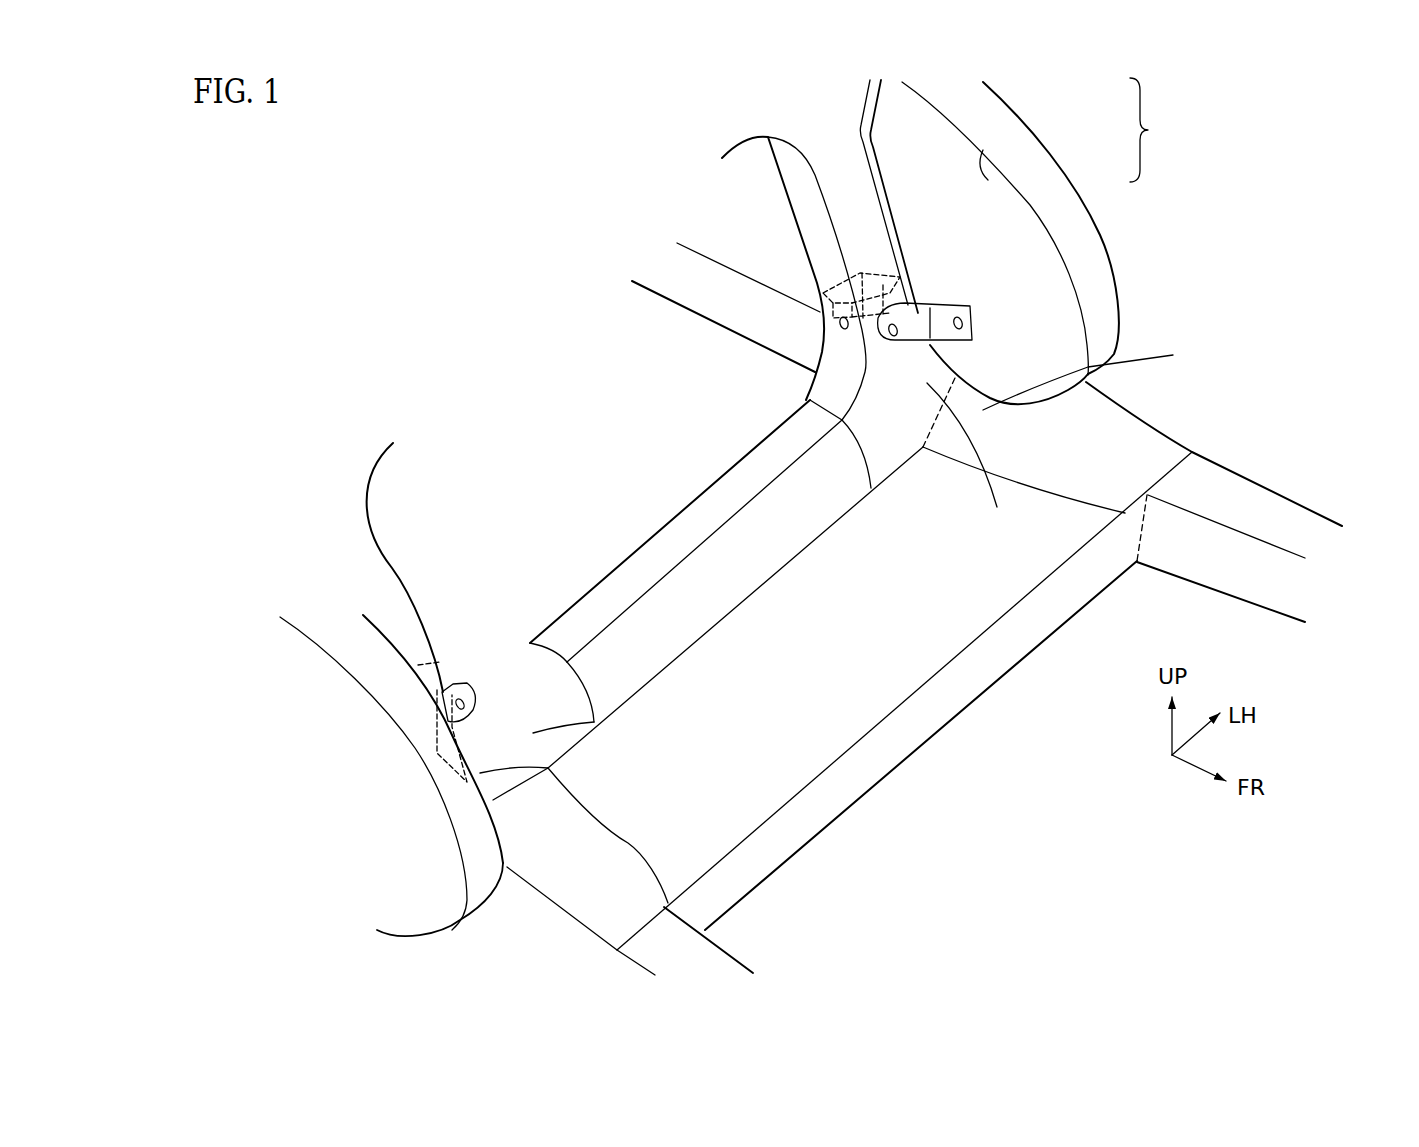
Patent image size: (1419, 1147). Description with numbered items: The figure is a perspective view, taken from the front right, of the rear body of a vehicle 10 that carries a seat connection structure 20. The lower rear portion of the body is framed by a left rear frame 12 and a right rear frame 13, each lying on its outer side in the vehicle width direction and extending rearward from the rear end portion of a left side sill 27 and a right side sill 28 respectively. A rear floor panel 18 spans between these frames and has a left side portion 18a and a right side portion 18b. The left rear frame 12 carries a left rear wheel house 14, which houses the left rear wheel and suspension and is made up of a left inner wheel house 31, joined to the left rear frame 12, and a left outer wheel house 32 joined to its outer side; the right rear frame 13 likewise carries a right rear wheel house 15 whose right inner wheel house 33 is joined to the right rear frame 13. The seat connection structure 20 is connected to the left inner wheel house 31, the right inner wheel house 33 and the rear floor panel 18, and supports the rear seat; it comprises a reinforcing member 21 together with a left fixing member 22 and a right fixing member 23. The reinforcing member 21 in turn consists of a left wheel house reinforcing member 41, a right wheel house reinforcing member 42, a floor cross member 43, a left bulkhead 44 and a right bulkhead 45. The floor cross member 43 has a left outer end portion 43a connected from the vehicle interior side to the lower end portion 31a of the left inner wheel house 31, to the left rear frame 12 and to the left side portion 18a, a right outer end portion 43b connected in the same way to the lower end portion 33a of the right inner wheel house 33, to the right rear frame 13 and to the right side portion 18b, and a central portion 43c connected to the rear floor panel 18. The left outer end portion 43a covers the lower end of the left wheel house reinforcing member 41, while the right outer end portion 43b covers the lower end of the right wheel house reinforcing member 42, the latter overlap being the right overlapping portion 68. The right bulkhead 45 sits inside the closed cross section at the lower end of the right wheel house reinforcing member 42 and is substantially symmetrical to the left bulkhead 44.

The vehicle 10 is at (461, 314).
The left rear frame 12 is at (1162, 483).
The right rear frame 13 is at (527, 842).
The left rear wheel house 14 is at (1156, 130).
The right rear wheel house 15 is at (330, 651).
The rear floor panel 18 is at (743, 665).
The left side portion of the rear floor panel 18a is at (920, 463).
The right side portion of the rear floor panel 18b is at (647, 758).
The seat connection structure 20 is at (572, 526).
The reinforcing member 21 is at (671, 509).
The left fixing member 22 is at (927, 300).
The right fixing member 23 is at (442, 722).
The left side sill 27 is at (1285, 511).
The right side sill 28 is at (709, 965).
The left inner wheel house 31 is at (1010, 118).
The lower end portion of the left inner wheel house 31a is at (940, 352).
The left outer wheel house 32 is at (1050, 168).
The right inner wheel house 33 is at (380, 672).
The lower end portion of the right inner wheel house 33a is at (548, 770).
The left wheel house reinforcing member 41 is at (794, 229).
The right wheel house reinforcing member 42 is at (415, 590).
The floor cross member 43 is at (724, 464).
The left outer end portion of the floor cross member 43a is at (929, 460).
The right outer end portion of the floor cross member 43b is at (595, 722).
The central portion of the floor cross member 43c is at (647, 560).
The left bulkhead 44 is at (872, 282).
The right bulkhead 45 is at (442, 660).
The right overlapping portion 68 is at (480, 698).